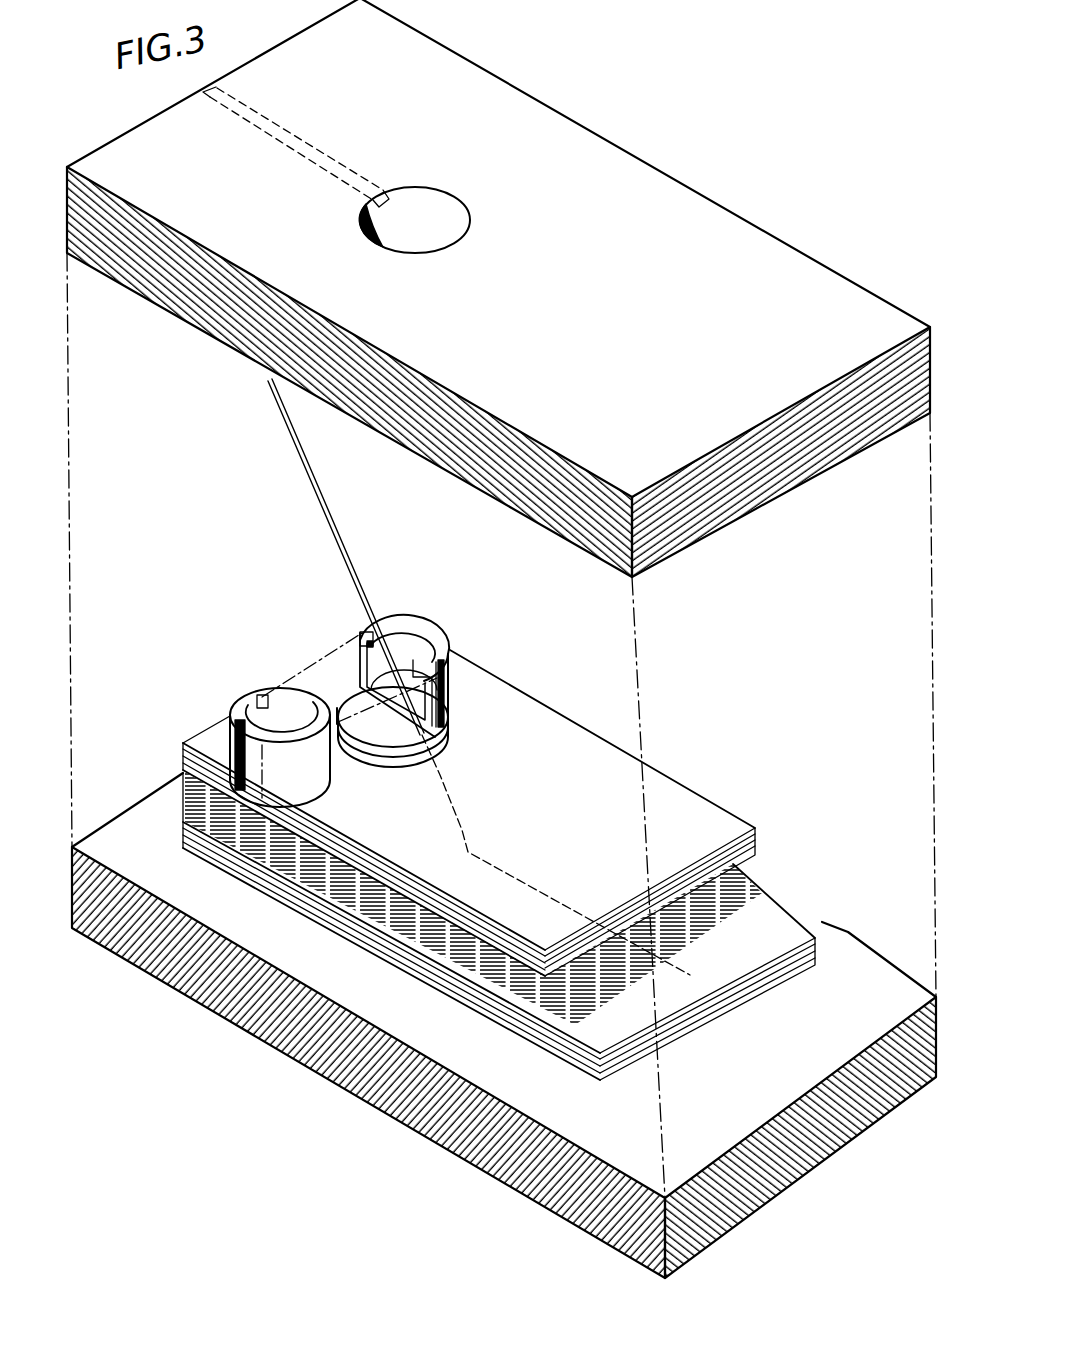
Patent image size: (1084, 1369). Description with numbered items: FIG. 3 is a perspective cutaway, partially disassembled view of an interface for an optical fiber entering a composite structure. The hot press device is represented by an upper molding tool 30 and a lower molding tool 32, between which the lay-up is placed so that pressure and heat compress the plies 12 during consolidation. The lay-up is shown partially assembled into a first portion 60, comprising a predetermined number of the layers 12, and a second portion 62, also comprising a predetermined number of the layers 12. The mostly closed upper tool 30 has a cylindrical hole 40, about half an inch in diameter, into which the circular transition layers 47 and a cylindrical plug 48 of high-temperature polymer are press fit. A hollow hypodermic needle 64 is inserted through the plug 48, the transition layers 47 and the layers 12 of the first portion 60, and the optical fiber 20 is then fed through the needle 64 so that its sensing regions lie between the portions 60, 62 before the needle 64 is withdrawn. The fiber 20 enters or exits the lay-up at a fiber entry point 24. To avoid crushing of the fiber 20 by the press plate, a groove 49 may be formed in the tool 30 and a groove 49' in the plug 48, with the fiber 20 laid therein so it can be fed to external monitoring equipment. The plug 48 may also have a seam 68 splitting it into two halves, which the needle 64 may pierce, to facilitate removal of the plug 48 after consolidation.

The plies 12 is at (755, 853).
The optical fiber 20 is at (278, 398).
The fiber entry point 24 is at (440, 735).
The upper molding tool 30 is at (685, 359).
The lower molding tool 32 is at (762, 1070).
The cylindrical hole 40 is at (437, 207).
The transition layers 47 is at (336, 733).
The cylindrical plug 48 is at (425, 633).
The groove 49 is at (296, 147).
The groove 49' is at (318, 662).
The first portion 60 is at (178, 770).
The second portion 62 is at (178, 848).
The hypodermic needle 64 is at (343, 546).
The seam 68 is at (362, 663).